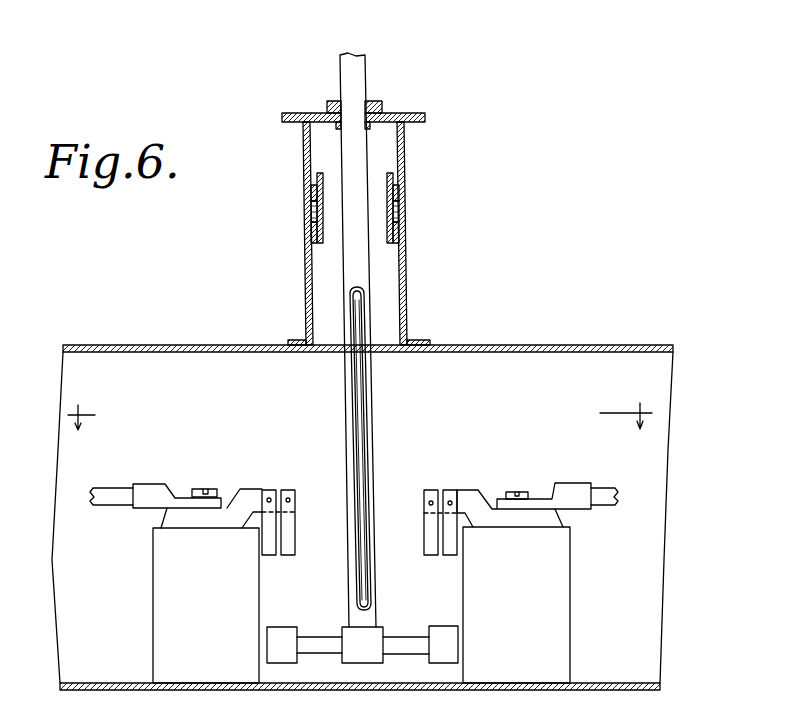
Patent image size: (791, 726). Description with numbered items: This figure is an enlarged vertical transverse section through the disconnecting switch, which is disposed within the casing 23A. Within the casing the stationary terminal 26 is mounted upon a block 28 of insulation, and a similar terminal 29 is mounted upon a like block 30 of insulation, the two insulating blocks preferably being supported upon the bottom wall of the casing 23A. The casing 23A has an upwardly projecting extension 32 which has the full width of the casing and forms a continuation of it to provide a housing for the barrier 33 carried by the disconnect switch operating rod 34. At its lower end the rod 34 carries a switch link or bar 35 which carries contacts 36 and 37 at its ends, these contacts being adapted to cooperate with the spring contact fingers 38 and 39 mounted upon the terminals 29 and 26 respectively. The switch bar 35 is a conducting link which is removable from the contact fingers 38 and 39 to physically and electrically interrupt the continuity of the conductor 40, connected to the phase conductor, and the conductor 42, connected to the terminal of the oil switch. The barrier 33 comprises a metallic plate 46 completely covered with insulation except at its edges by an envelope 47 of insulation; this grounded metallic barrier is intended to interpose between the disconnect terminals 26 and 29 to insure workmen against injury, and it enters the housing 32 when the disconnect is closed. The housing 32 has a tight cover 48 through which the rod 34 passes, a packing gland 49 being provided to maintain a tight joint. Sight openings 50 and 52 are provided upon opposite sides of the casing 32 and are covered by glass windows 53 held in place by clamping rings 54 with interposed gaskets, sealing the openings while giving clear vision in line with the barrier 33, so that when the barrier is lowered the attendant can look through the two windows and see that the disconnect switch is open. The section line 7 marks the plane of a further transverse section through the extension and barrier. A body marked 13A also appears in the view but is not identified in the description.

The section line 7- 7 is at (363, 408).
The housing 13A is at (430, 330).
The casing 23A is at (594, 345).
The stationary terminal 26 is at (470, 490).
The block of insulation 28 is at (566, 613).
The terminal 29 is at (247, 489).
The block of insulation 30 is at (158, 576).
The extension 32 is at (304, 140).
The barrier 33 is at (366, 306).
The disconnect switch operating rod 34 is at (362, 80).
The switch link or bar 35 is at (397, 637).
The contact 36 is at (280, 630).
The contact 37 is at (440, 632).
The spring contact fingers 38 is at (296, 546).
The spring contact fingers 39 is at (424, 547).
The conductor 40 is at (606, 500).
The conductor 42 is at (106, 492).
The metallic plate 46 is at (360, 392).
The envelope of insulation 47 is at (354, 402).
The cover 48 is at (396, 113).
The packing gland 49 is at (330, 101).
The sight opening 50 is at (400, 202).
The sight opening 52 is at (306, 197).
The glass window 53 is at (312, 210).
The clamping ring 54 is at (394, 178).